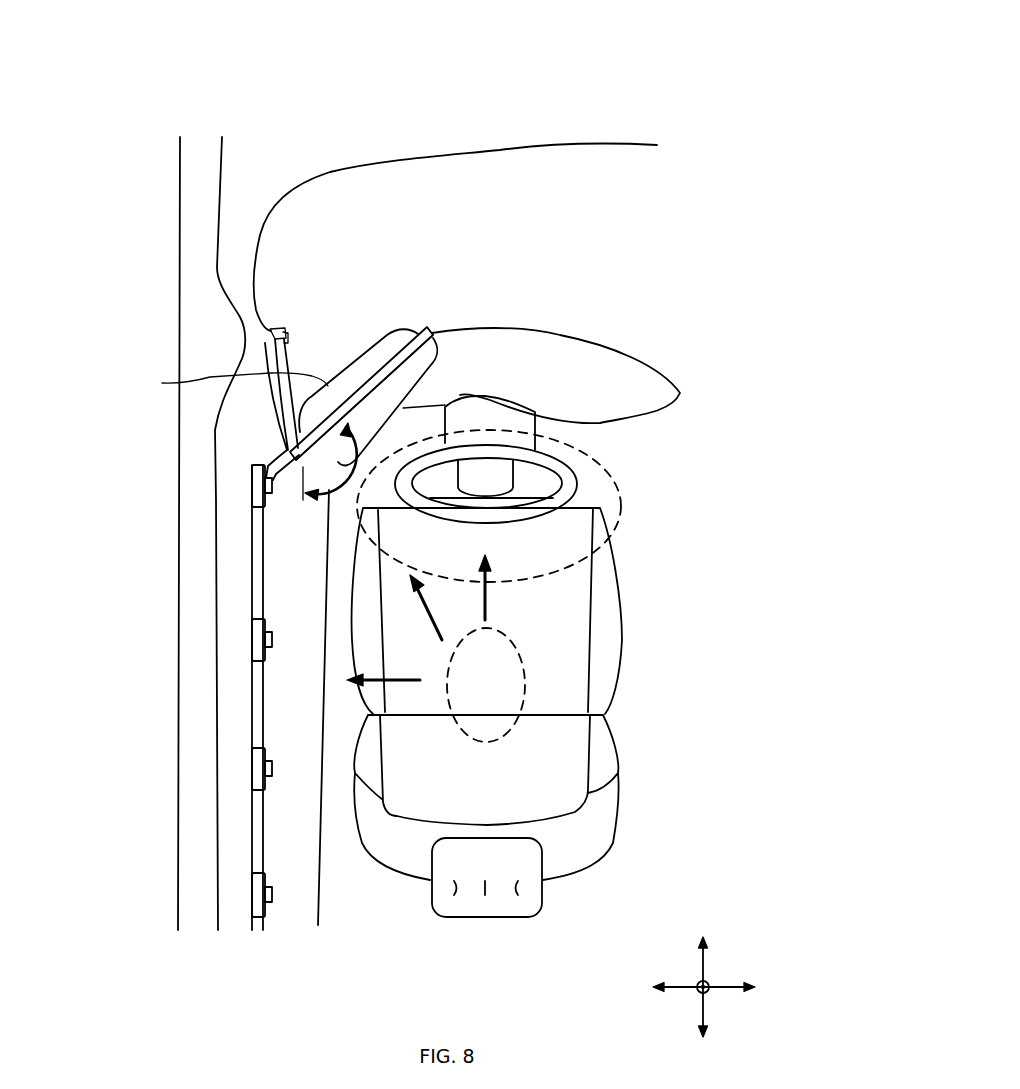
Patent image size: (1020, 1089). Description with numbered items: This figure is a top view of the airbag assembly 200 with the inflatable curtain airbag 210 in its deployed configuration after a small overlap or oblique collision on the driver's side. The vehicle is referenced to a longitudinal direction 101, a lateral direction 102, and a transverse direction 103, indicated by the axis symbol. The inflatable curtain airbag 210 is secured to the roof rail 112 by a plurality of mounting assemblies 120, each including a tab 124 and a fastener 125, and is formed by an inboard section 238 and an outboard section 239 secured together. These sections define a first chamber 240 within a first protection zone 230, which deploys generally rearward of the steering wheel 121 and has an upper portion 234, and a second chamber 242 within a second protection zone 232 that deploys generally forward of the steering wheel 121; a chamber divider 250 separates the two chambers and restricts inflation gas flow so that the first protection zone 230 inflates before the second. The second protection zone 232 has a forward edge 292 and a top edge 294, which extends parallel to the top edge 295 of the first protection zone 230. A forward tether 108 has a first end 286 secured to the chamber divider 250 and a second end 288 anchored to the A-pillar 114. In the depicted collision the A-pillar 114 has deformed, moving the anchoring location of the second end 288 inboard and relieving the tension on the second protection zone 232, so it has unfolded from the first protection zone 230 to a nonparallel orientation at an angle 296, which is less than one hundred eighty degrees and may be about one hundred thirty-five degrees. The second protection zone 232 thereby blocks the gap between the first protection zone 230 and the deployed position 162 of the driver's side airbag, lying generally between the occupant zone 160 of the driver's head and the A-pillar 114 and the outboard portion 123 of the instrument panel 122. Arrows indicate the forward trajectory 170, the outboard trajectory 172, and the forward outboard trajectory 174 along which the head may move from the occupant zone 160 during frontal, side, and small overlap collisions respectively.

The airbag assembly 200 is at (589, 67).
The instrument panel 122 is at (440, 165).
The outboard portion of the instrument panel 123 is at (358, 239).
The second end of the forward tether 288 is at (270, 330).
The forward tether 108 is at (298, 353).
The second protection zone 232 is at (346, 348).
The second chamber 242 is at (368, 360).
The top edge of the second protection zone 294 is at (402, 350).
The forward edge 292 is at (440, 330).
The inflatable curtain airbag 210 is at (449, 358).
The A-pillar 114 is at (253, 347).
The outboard section 239 is at (224, 382).
The angle 296 is at (435, 395).
The first end of the forward tether 286 is at (286, 438).
The chamber divider 250 is at (289, 452).
The steering wheel 121 is at (570, 465).
The roof rail 112 is at (233, 489).
The deployed position of the driver's side airbag 162 is at (623, 500).
The first protection zone 230 is at (236, 565).
The first chamber 240 is at (276, 585).
The forward trajectory 170 is at (487, 600).
The forward outboard trajectory 174 is at (427, 618).
The occupant zone 160 is at (505, 628).
The mounting assemblies 120 is at (240, 647).
The top edge of the first protection zone 295 is at (263, 705).
The outboard trajectory 172 is at (412, 684).
The upper portion 234 is at (303, 688).
The tab 124 is at (258, 873).
The fastener 125 is at (272, 897).
The inboard section 238 is at (318, 907).
The longitudinal direction 101 is at (707, 952).
The lateral direction 102 is at (733, 985).
The transverse direction 103 is at (708, 992).